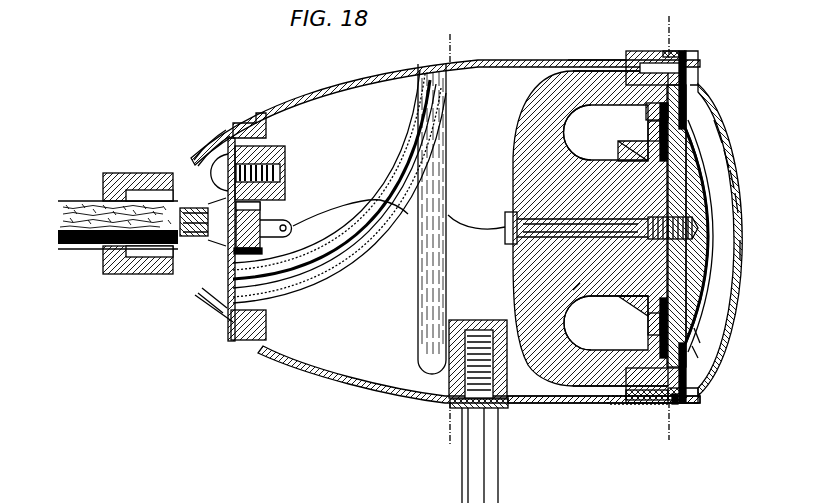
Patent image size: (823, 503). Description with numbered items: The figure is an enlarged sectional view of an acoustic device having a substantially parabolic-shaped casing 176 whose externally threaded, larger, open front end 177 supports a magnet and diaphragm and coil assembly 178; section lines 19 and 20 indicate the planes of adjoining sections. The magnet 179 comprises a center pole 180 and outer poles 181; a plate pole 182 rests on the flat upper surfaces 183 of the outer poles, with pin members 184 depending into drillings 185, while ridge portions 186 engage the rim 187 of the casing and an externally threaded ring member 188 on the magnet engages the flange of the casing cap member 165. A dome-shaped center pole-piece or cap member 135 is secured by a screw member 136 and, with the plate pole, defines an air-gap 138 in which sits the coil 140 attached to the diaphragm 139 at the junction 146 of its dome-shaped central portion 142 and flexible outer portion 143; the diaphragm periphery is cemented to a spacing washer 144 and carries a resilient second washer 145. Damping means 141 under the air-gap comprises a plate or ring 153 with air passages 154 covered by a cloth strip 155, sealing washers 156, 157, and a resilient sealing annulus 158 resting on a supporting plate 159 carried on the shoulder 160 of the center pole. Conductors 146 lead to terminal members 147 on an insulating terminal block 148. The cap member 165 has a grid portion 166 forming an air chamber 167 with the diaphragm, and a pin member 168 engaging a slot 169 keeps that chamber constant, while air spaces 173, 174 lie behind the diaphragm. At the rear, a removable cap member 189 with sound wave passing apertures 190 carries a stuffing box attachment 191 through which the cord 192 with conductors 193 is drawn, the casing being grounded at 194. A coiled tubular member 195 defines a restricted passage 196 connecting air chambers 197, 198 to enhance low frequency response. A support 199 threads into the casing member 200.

The section line 19- 19 is at (659, 22).
The section line 20- 20 is at (457, 34).
The center pole-piece or cap member 135 is at (694, 277).
The screw member 136 is at (498, 232).
The air-gap 138 is at (702, 300).
The diaphragm 139 is at (676, 268).
The coil 140 is at (710, 129).
The damping means 141 is at (640, 133).
The central portion 142 is at (718, 153).
The outer portion 143 is at (694, 330).
The spacing member or washer 144 is at (672, 50).
The second spacing member or washer 145 is at (697, 45).
The conductors 146 is at (343, 197).
The terminal members 147 is at (263, 214).
The terminal block 148 is at (261, 246).
The plate member or ring 153 is at (650, 98).
The apertures or air passages 154 is at (642, 330).
The strip of cloth 155 is at (640, 320).
The sealing member or washer 156 is at (640, 303).
The sealing member or washer 157 is at (690, 344).
The sealing annulus or member 158 is at (613, 127).
The supporting plate or member 159 is at (612, 145).
The shoulder or ledge 160 is at (572, 276).
The casing cap member 165 is at (696, 404).
The grid or apertured portion 166 is at (741, 244).
The air chamber or space 167 is at (715, 192).
The pin member 168 is at (669, 397).
The slot 169 is at (684, 386).
The chamber or air space 173 is at (736, 172).
The chamber or air space 174 is at (683, 102).
The casing 176 is at (300, 353).
The front end 177 is at (597, 44).
The magnet and diaphragm and coil assembly 178 is at (532, 380).
The magnet 179 is at (506, 141).
The center pole 180 is at (605, 308).
The outer poles 181 is at (555, 63).
The plate pole 182 is at (697, 62).
The upper surfaces 183 is at (665, 44).
The pin members 184 is at (682, 88).
The depressions or drillings 185 is at (600, 100).
The ridge portions 186 is at (642, 44).
The rim 187 is at (635, 386).
The ring member 188 is at (637, 404).
The removable cap member 189 is at (218, 308).
The sound wave passing apertures 190 is at (192, 148).
The stuffing box attachment 191 is at (125, 267).
The cord 192 is at (72, 210).
The conductors 193 is at (200, 248).
The ground 194 is at (286, 142).
The tubular member 195 is at (357, 240).
The restricted passage 196 is at (288, 278).
The air chamber or space 197 is at (358, 314).
The air chamber or space 198 is at (197, 245).
The support 199 is at (480, 446).
The casing member 200 is at (448, 311).